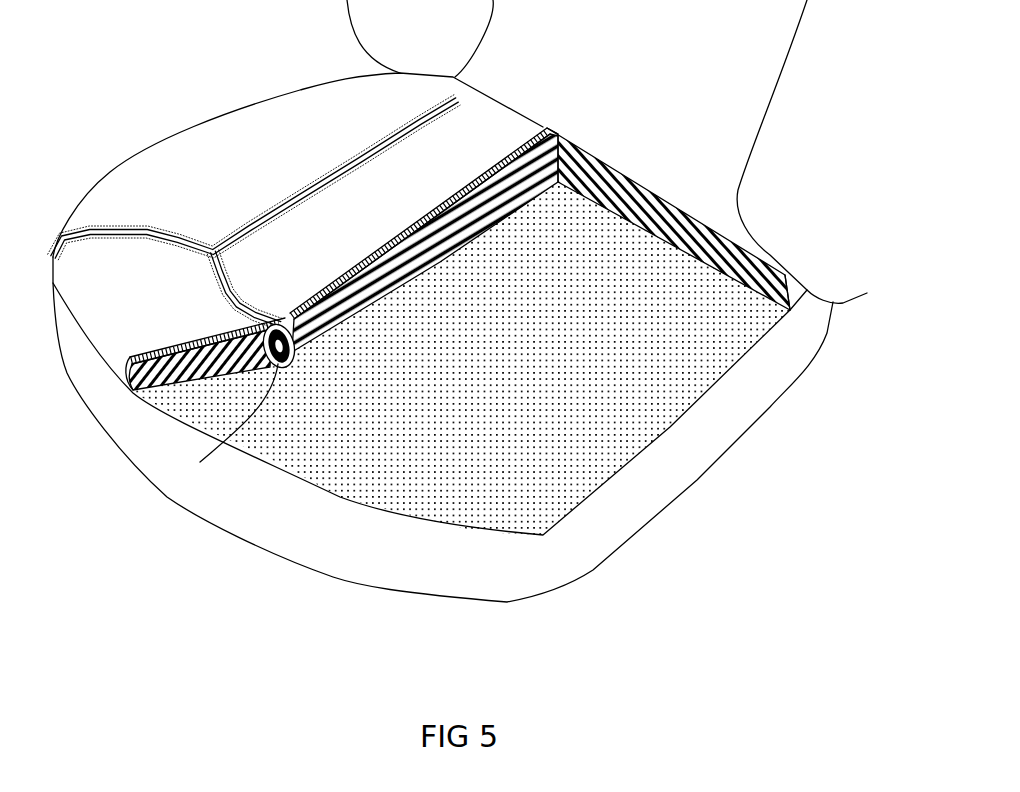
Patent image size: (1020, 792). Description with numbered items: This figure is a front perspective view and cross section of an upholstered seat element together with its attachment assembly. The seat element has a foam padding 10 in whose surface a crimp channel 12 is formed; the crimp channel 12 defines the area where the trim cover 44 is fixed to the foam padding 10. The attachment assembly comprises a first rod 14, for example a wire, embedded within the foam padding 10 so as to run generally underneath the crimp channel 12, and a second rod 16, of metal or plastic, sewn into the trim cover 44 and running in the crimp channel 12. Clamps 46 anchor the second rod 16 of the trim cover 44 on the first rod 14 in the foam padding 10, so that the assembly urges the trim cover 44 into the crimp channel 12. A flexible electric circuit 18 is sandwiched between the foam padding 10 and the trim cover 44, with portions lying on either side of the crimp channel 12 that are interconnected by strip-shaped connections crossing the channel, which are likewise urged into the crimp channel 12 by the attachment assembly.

The foam padding 10 is at (153, 355).
The crimp channel 12 is at (316, 192).
The first rod 14 is at (300, 355).
The second rod 16 is at (275, 316).
The flexible electric circuit 18 is at (428, 217).
The trim cover 44 is at (545, 128).
The clamps 46 is at (229, 426).